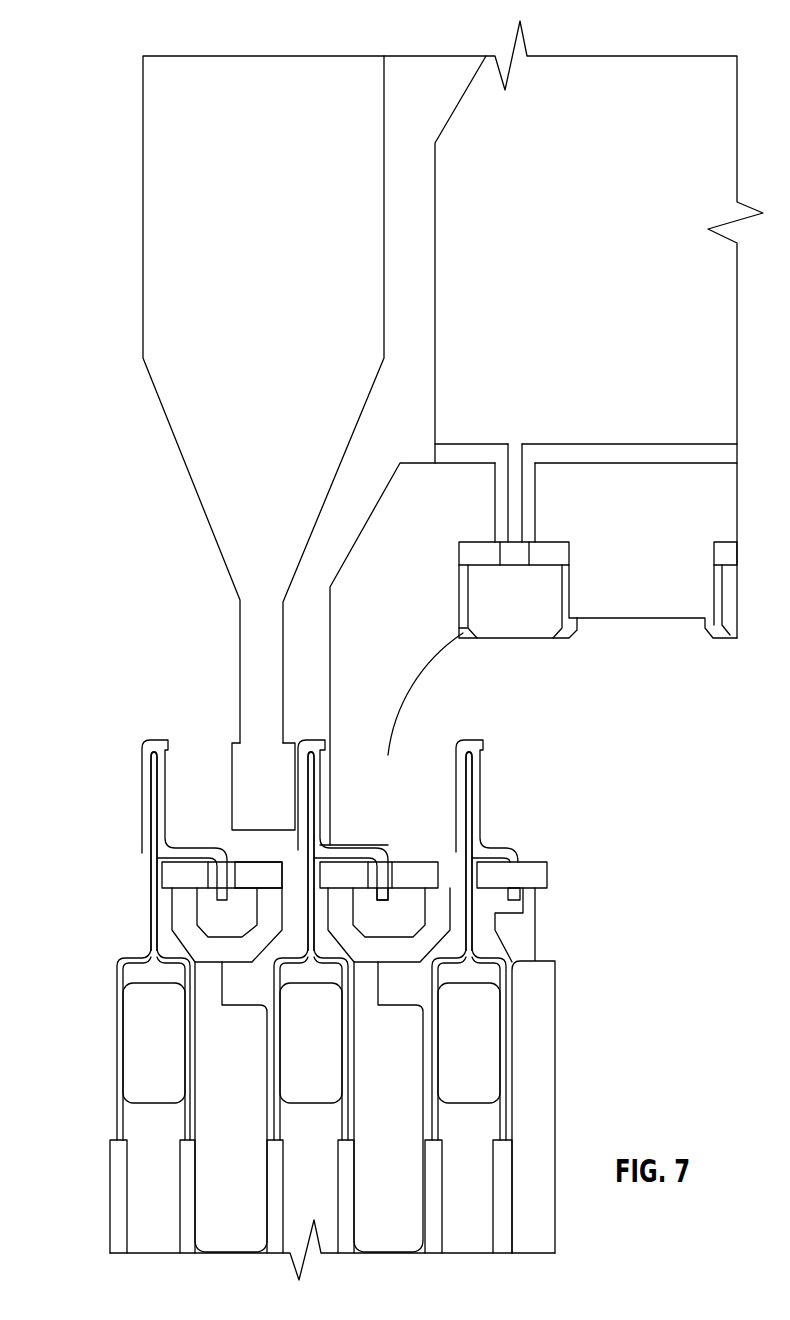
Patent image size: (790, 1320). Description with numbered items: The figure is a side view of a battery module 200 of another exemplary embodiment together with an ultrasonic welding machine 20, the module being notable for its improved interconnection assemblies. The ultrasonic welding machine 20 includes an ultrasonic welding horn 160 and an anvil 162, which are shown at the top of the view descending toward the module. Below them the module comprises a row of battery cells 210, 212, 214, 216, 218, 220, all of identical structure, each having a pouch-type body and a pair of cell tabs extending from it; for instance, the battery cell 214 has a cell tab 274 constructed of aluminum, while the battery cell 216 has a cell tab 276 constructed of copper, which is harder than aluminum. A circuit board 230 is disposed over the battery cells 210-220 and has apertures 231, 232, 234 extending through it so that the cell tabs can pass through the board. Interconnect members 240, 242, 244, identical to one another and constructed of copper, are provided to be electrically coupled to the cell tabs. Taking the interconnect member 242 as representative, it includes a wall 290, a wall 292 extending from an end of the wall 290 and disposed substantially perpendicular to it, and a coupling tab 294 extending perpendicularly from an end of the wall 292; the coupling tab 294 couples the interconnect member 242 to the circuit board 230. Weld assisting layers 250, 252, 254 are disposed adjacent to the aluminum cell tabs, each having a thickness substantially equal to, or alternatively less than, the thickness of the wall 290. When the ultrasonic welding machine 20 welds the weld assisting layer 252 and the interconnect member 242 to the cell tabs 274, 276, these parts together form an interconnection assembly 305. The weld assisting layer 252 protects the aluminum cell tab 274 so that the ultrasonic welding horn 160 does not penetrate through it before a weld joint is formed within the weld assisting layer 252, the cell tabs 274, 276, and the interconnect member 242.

The ultrasonic welding machine 20 is at (108, 288).
The ultrasonic welding horn 160 is at (202, 436).
The anvil 162 is at (352, 565).
The weld assisting layer 252 is at (300, 818).
The interconnection assembly 305 is at (338, 763).
The battery module 200 is at (93, 641).
The weld assisting layer 250 is at (140, 812).
The interconnect member 240 is at (163, 813).
The aperture 231 is at (162, 875).
The aperture 232 is at (285, 873).
The cell tab 274 is at (276, 968).
The wall 290 is at (320, 788).
The interconnect member 242 is at (333, 815).
The wall 292 is at (360, 855).
The coupling tab 294 is at (380, 882).
The cell tab 276 is at (345, 960).
The weld assisting layer 254 is at (456, 812).
The interconnect member 244 is at (480, 818).
The circuit board 230 is at (540, 875).
The aperture 234 is at (482, 872).
The battery cell 210 is at (118, 1077).
The battery cell 212 is at (185, 1093).
The battery cell 214 is at (272, 1052).
The battery cell 216 is at (344, 1052).
The battery cell 218 is at (437, 1093).
The battery cell 220 is at (505, 1105).